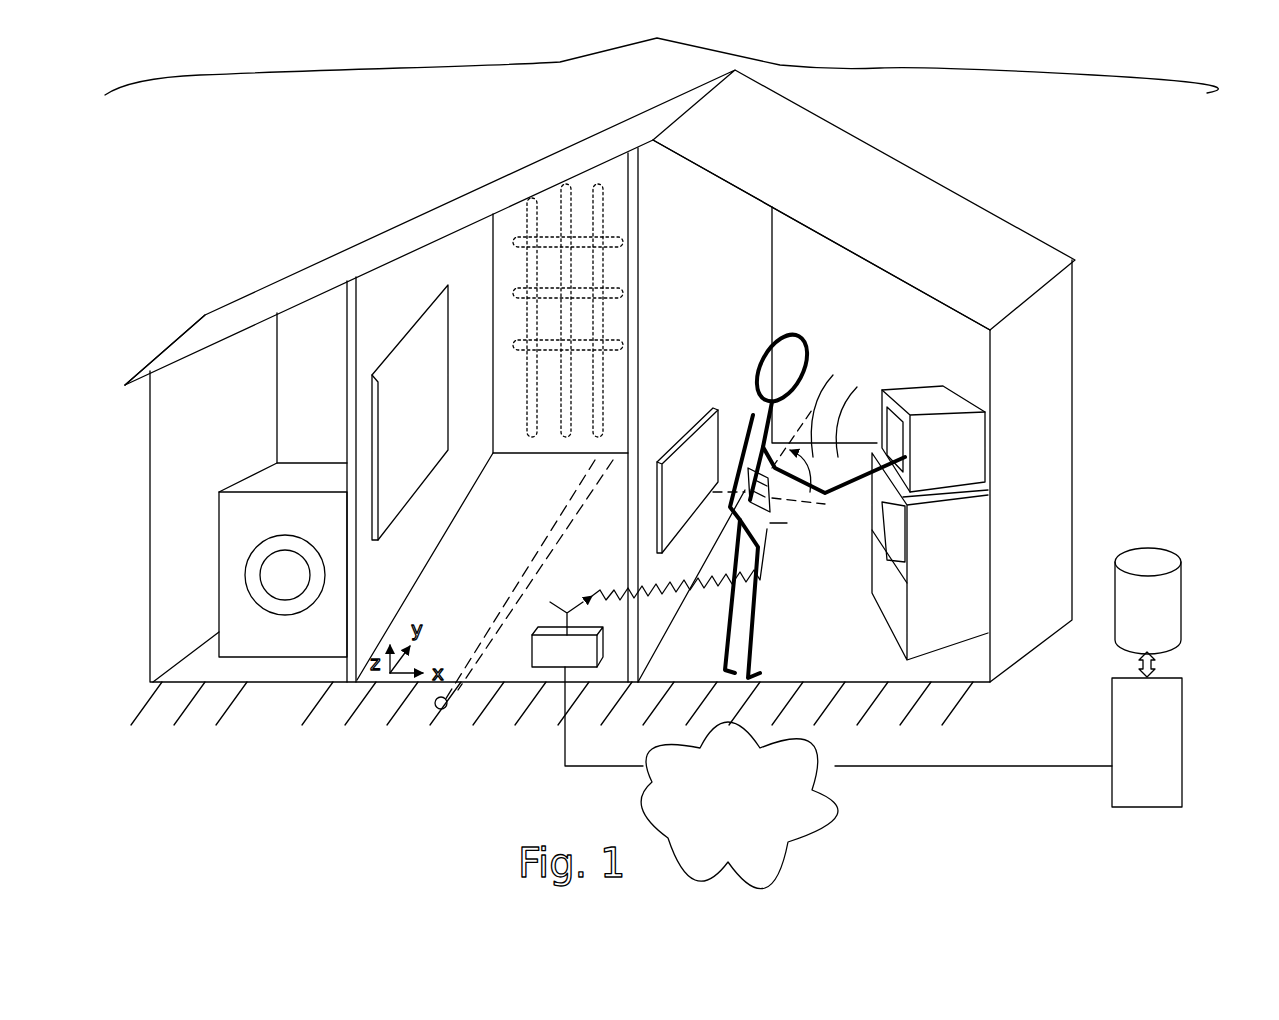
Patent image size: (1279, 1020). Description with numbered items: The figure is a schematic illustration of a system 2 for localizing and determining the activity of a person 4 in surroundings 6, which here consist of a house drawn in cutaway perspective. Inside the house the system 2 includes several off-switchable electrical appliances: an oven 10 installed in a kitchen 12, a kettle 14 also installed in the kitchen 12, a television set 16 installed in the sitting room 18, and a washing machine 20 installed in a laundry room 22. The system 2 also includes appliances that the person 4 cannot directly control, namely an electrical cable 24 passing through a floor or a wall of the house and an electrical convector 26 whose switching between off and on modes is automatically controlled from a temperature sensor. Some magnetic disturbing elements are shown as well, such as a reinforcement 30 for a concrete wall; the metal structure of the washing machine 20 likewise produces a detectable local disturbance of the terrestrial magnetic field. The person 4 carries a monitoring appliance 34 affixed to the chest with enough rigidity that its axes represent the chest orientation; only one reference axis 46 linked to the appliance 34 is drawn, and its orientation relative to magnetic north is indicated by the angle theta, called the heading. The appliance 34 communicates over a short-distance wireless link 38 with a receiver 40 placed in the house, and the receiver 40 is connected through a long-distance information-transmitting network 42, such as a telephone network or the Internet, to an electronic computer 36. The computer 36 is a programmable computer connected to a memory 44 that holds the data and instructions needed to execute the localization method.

The system 2 is at (661, 53).
The person 4 is at (775, 372).
The surroundings 6 is at (943, 185).
The oven 10 is at (967, 458).
The kitchen 12 is at (810, 247).
The kettle 14 is at (900, 540).
The television set 16 is at (403, 335).
The sitting room 18 is at (457, 265).
The washing machine 20 is at (275, 633).
The laundry room 22 is at (188, 388).
The electrical cable 24 is at (445, 688).
The electrical convector 26 is at (697, 450).
The reinforcement 30 is at (533, 220).
The monitoring appliance 34 is at (767, 531).
The electronic computer 36 is at (1191, 781).
The wireless link 38 is at (673, 563).
The receiver 40 is at (552, 653).
The information-transmitting network 42 is at (838, 778).
The memory 44 is at (1147, 572).
The reference axis 46 is at (783, 509).